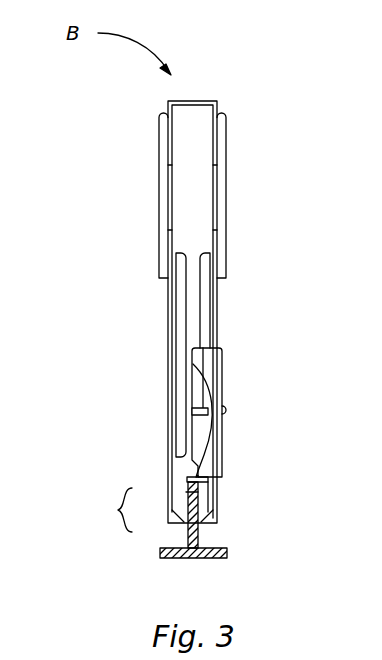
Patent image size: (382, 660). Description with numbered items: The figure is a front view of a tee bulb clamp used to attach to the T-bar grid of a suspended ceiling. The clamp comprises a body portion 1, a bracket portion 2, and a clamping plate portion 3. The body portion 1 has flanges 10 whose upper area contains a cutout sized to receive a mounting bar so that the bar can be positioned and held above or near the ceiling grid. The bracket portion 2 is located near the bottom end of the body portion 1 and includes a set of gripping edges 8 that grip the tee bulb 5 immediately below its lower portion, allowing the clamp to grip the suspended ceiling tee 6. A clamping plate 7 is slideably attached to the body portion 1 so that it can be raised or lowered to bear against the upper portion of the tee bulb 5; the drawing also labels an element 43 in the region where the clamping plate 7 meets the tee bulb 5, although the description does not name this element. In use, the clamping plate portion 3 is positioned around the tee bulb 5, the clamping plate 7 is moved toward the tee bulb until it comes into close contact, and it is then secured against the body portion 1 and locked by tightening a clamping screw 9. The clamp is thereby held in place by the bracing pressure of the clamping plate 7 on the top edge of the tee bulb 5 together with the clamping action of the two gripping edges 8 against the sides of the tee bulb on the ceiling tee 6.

The body portion 1 is at (216, 103).
The bracket portion 2 is at (112, 510).
The clamping plate portion 3 is at (169, 430).
The tee bulb 5 is at (186, 490).
The suspended ceiling tee 6 is at (228, 553).
The clamping plate 7 is at (222, 362).
The gripping edges 8 is at (204, 518).
The clamping screw 9 is at (228, 410).
The flanges 10 is at (202, 318).
The pin head 43 is at (217, 492).